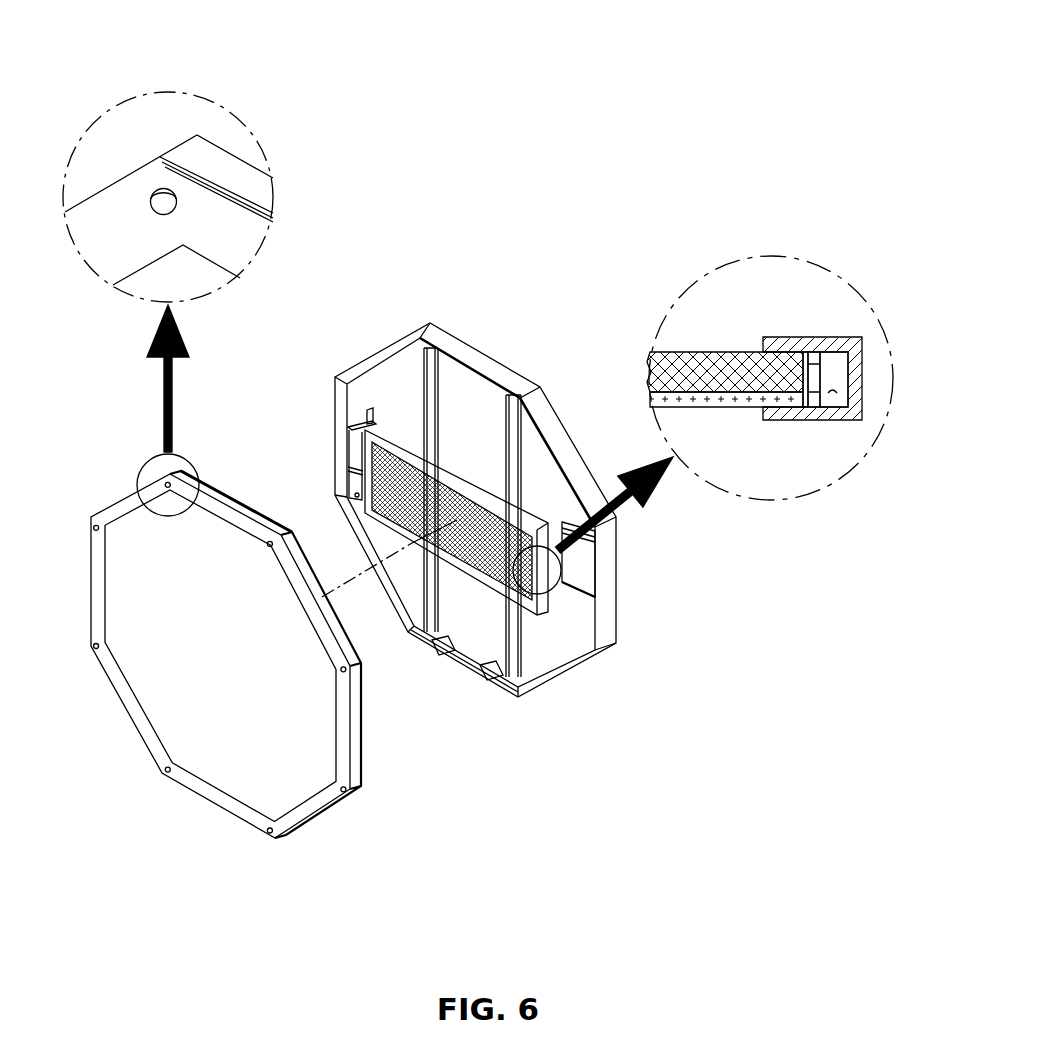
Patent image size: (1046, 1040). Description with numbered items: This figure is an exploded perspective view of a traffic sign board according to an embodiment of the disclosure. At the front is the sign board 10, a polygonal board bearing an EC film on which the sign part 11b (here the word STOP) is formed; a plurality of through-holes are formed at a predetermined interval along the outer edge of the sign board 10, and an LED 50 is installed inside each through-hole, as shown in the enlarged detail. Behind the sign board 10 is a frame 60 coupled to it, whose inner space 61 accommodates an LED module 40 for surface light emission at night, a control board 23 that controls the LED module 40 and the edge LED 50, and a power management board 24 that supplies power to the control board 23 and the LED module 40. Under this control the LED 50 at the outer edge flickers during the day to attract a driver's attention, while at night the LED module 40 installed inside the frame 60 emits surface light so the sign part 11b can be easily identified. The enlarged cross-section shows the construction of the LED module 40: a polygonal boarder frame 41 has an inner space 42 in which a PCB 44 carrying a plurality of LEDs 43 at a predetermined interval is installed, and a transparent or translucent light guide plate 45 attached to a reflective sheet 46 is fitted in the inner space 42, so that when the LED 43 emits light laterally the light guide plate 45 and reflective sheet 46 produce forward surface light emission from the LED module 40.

The sign board 10 is at (174, 816).
The sign part 11b is at (266, 716).
The control board 23 is at (582, 573).
The power management board 24 is at (367, 450).
The LED module 40 is at (493, 558).
The polygonal boarder frame 41 is at (815, 352).
The inner space 42 is at (830, 395).
The LED 43 is at (815, 373).
The PCB 44 is at (813, 400).
The light guide plate 45 is at (720, 353).
The reflective sheet 46 is at (737, 398).
The LED 50 is at (160, 196).
The frame 60 is at (478, 355).
The inner space 61 is at (480, 421).